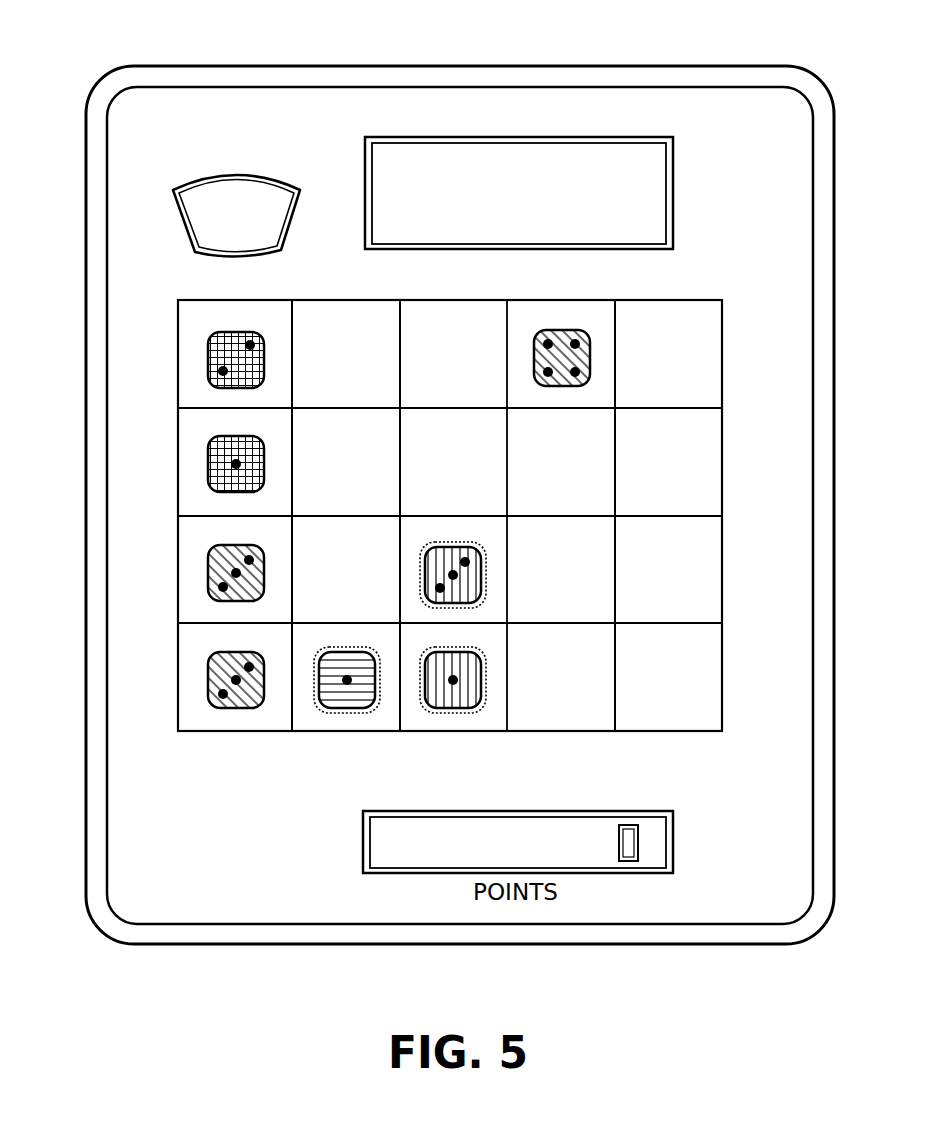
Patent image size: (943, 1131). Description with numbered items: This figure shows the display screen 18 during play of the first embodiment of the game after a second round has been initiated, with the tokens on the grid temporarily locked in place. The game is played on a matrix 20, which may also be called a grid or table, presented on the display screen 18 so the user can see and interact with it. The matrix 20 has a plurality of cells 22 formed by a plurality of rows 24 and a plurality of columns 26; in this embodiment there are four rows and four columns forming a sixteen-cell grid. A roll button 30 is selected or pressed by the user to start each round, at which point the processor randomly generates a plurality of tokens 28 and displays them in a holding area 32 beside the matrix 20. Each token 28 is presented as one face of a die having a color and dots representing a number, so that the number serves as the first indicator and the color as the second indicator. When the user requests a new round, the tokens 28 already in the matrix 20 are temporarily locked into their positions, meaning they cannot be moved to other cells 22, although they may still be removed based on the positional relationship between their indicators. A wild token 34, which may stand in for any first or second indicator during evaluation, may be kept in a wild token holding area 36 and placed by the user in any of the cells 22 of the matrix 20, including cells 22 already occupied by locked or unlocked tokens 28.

The display screen 18 is at (121, 831).
The matrix 20 is at (748, 338).
The cells 22 is at (715, 455).
The rows 24 is at (745, 424).
The columns 26 is at (353, 289).
The tokens 28 is at (208, 350).
The roll button 30 is at (187, 218).
The holding area 32 is at (228, 722).
The wild token 34 is at (484, 684).
The wild token holding area 36 is at (643, 155).